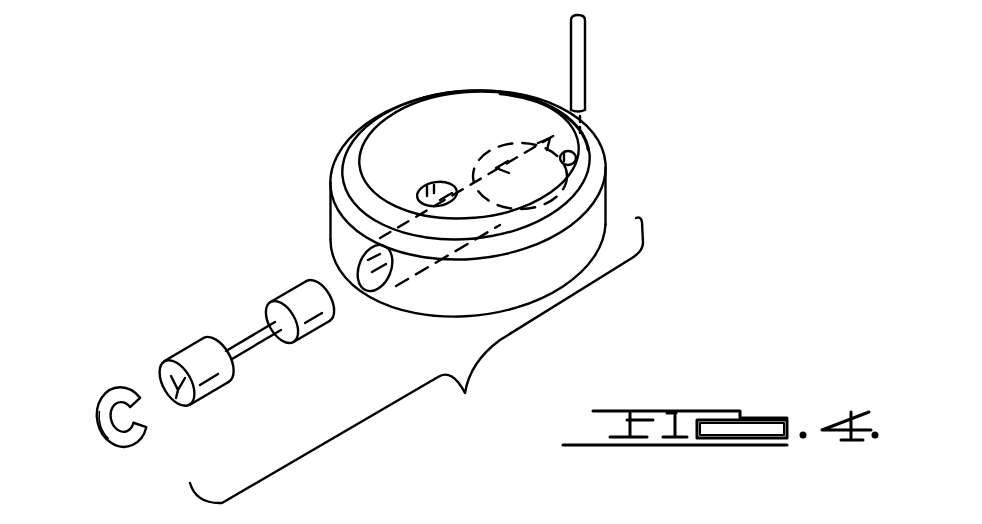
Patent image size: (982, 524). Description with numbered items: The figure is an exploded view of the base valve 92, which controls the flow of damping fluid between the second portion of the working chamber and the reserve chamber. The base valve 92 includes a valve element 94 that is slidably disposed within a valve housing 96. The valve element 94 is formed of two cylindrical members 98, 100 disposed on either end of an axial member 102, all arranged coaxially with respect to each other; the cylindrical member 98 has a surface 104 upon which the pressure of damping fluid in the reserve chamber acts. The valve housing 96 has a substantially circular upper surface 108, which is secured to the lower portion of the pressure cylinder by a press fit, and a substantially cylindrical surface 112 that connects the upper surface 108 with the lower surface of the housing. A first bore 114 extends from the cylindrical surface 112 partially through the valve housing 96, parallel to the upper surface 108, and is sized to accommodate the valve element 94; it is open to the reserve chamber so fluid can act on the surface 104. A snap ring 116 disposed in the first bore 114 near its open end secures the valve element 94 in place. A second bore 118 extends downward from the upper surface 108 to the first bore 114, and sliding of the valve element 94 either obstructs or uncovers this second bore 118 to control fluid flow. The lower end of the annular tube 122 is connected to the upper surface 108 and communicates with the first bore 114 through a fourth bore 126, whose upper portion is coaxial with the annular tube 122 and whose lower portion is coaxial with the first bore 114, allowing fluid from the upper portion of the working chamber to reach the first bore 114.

The base valve 92 is at (416, 361).
The valve element 94 is at (240, 381).
The valve housing 96 is at (448, 108).
The cylindrical member 98 is at (193, 357).
The cylindrical member 100 is at (328, 330).
The axial member 102 is at (243, 342).
The surface 104 is at (163, 378).
The substantially circular upper surface 108 is at (413, 113).
The substantially cylindrical surface 112 is at (603, 199).
The first bore 114 is at (359, 263).
The snap ring 116 is at (98, 408).
The second bore 118 is at (418, 191).
The annular tube 122 is at (586, 25).
The fourth bore 126 is at (585, 133).